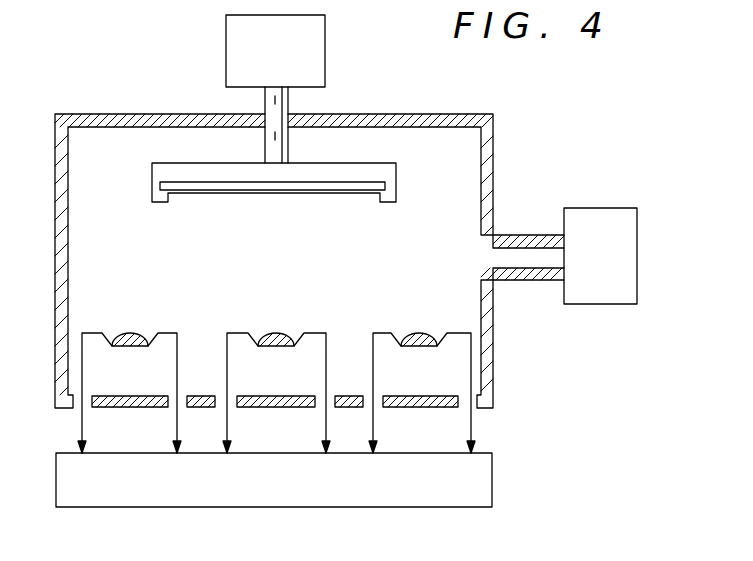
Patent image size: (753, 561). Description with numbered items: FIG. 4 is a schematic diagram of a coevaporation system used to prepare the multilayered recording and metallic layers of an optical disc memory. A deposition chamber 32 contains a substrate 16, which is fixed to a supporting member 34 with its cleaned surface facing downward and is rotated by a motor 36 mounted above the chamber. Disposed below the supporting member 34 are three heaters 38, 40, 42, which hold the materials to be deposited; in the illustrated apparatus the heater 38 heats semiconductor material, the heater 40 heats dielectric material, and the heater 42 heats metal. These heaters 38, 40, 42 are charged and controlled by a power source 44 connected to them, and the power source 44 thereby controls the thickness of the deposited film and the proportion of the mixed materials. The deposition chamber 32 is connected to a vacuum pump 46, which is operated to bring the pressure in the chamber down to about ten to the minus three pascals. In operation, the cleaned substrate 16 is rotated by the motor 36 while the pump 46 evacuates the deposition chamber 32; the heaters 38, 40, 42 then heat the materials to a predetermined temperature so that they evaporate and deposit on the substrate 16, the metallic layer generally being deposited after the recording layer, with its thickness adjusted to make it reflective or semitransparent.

The substrate 16 is at (263, 193).
The deposition chamber 32 is at (55, 318).
The supporting member 34 is at (396, 182).
The motor 36 is at (325, 42).
The heater 38 is at (123, 347).
The heater 40 is at (275, 347).
The heater 42 is at (422, 347).
The power source 44 is at (492, 484).
The vacuum pump 46 is at (604, 304).